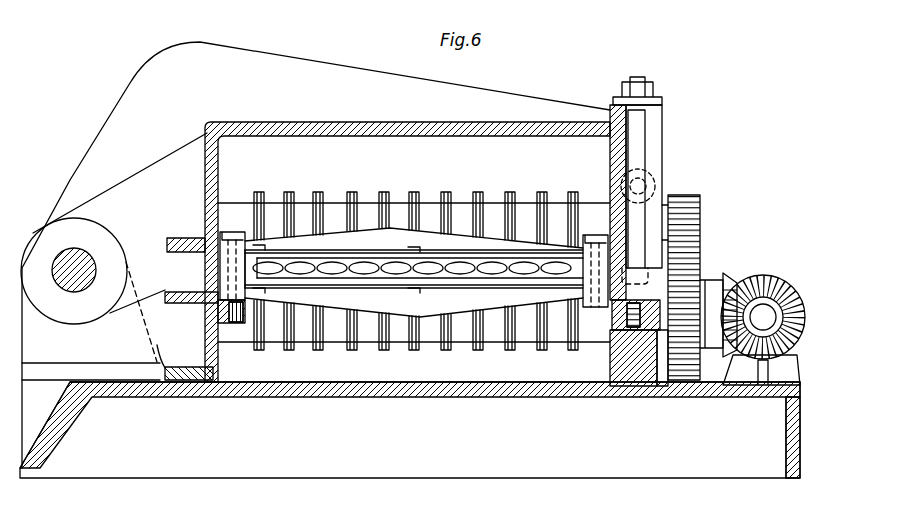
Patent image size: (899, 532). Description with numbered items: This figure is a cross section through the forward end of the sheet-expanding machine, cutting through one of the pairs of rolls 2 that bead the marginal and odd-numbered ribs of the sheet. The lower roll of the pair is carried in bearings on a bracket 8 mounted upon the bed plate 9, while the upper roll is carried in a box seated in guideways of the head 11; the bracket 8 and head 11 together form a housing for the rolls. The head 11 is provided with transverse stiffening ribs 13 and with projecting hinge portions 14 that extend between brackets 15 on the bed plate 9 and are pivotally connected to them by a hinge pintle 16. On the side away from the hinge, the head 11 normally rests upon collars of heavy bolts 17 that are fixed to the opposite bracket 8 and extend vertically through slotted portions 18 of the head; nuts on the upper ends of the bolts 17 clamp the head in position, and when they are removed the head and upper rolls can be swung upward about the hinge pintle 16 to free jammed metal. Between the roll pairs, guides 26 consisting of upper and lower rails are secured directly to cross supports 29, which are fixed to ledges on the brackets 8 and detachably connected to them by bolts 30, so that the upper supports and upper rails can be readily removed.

The rolls 2 is at (332, 210).
The brackets 8 is at (217, 371).
The bed plate 9 is at (393, 478).
The head 11 is at (342, 112).
The transverse stiffening ribs 13 is at (300, 42).
The hinge portions 14 is at (110, 181).
The brackets 15 is at (135, 333).
The hinge pintle 16 is at (138, 228).
The bolts 17 is at (638, 128).
The slotted portions 18 is at (604, 156).
The guides 26 is at (392, 252).
The cross supports 29 is at (423, 235).
The bolts 30 is at (597, 233).